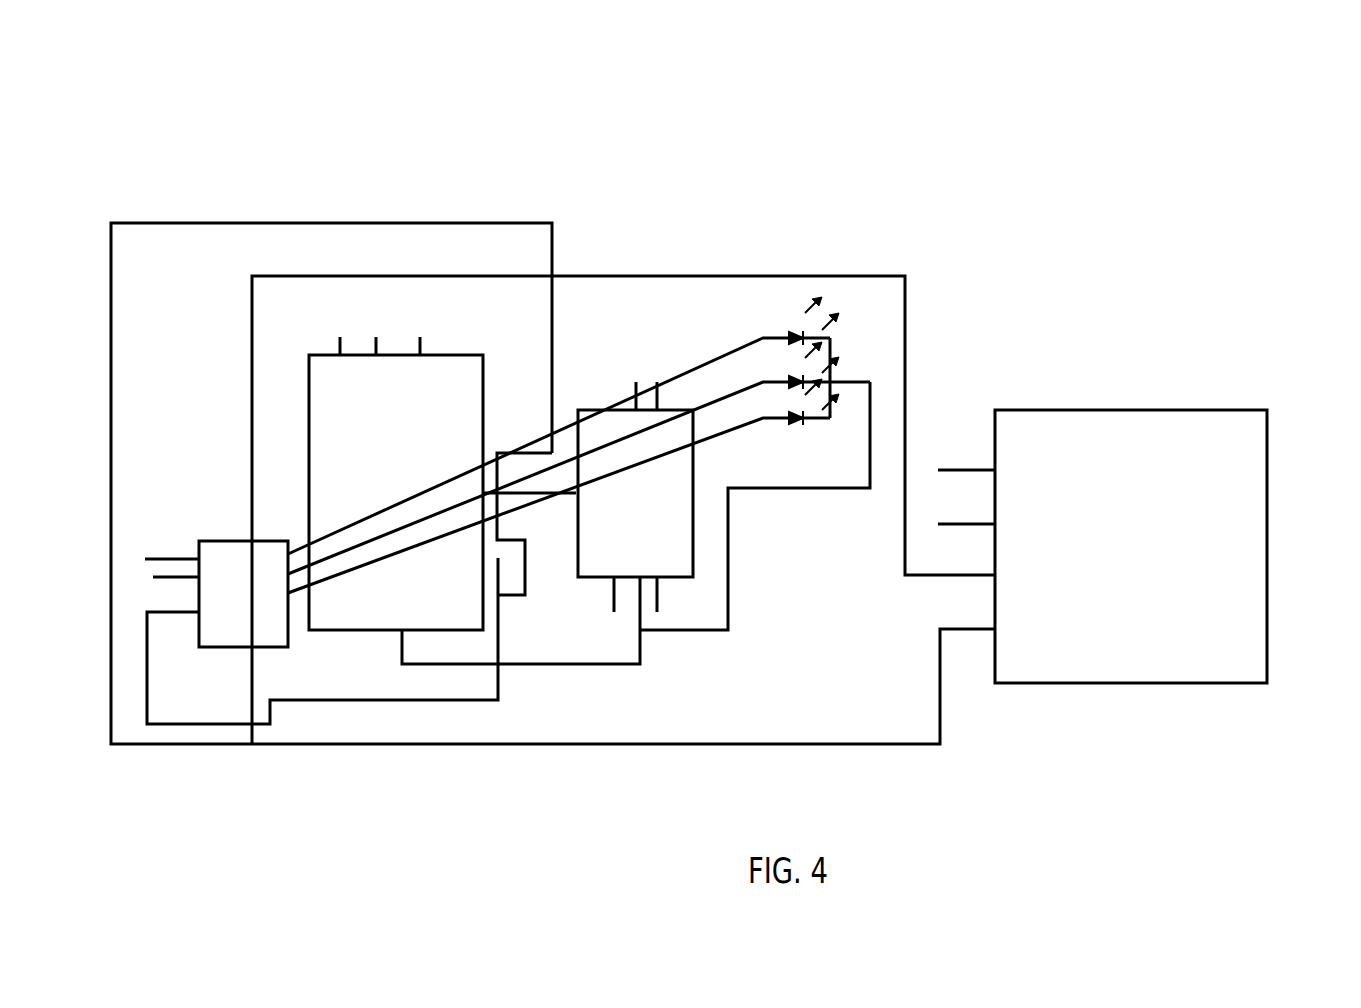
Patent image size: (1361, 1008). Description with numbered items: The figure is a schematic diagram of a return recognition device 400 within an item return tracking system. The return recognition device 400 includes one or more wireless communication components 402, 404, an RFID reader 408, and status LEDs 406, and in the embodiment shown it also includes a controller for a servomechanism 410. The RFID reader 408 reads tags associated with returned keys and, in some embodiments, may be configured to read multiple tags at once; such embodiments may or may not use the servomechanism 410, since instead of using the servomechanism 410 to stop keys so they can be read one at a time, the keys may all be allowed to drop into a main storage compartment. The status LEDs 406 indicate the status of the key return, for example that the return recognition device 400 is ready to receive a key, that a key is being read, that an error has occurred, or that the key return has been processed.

The return recognition device 400 is at (1014, 94).
The wireless communication component 402 is at (357, 383).
The wireless communication component 404 is at (250, 605).
The status LEDs 406 is at (836, 337).
The RFID reader 408 is at (636, 522).
The controller for a servomechanism 410 is at (1183, 463).